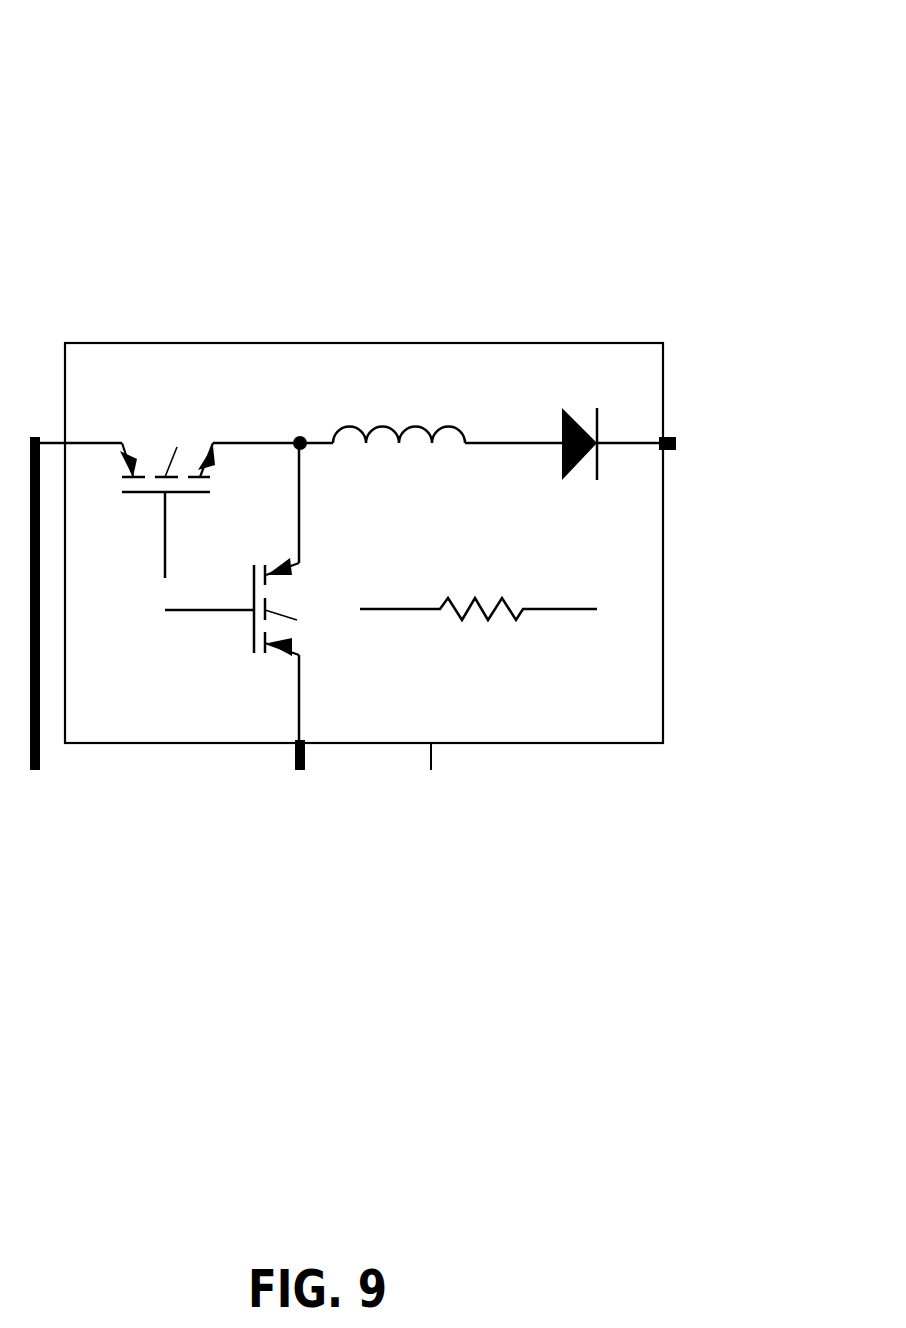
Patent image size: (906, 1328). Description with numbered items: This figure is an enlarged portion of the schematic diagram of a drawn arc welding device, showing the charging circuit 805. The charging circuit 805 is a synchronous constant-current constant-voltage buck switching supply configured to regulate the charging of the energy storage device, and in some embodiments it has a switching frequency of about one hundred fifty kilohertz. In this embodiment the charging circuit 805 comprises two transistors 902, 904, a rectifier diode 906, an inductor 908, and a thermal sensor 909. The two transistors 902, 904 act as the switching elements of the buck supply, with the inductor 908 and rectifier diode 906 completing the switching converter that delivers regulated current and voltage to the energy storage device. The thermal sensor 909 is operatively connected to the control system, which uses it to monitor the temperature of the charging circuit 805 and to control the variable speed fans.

The charging circuit 805 is at (131, 55).
The transistor 902 is at (165, 416).
The transistor 904 is at (250, 666).
The rectifier diode 906 is at (617, 476).
The inductor 908 is at (413, 493).
The thermal sensor 909 is at (565, 652).